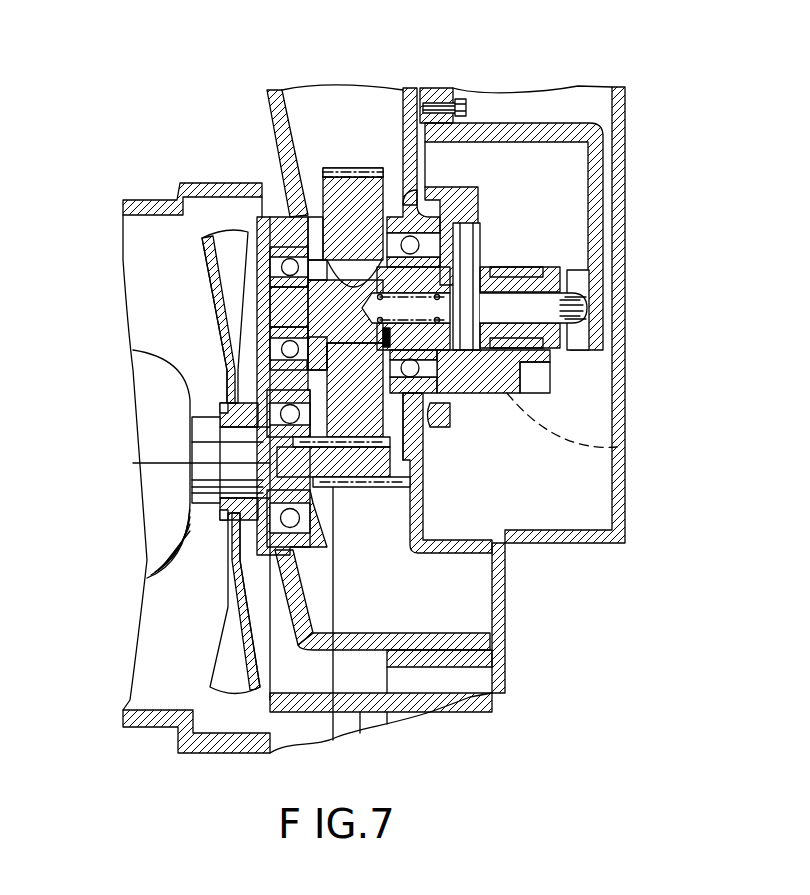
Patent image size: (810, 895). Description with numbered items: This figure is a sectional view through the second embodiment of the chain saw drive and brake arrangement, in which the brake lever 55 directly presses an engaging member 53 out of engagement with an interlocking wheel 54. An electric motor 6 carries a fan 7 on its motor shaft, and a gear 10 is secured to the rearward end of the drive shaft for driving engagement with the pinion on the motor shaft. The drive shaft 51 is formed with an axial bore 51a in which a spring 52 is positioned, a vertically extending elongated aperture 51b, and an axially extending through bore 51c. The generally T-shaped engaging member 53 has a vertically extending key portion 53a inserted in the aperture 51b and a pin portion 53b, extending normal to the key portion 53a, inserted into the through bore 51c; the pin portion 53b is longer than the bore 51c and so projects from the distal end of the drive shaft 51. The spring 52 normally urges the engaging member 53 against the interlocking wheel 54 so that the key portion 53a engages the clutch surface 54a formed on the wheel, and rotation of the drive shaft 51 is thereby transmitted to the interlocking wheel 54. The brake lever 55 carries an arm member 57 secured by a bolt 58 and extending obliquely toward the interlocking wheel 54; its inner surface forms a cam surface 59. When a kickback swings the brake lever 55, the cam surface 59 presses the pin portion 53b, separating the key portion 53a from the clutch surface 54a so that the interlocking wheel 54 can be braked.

The electric motor 6 is at (145, 491).
The fan 7 is at (232, 582).
The gear 10 is at (370, 452).
The drive shaft 51 is at (285, 235).
The axial bore 51a is at (365, 310).
The elongated aperture 51b is at (402, 212).
The through bore 51c is at (560, 302).
The spring 52 is at (373, 300).
The engaging member 53 is at (560, 328).
The key portion 53a is at (470, 272).
The pin portion 53b is at (588, 297).
The interlocking wheel 54 is at (513, 370).
The clutch surface 54a is at (625, 448).
The brake lever 55 is at (431, 90).
The arm member 57 is at (606, 150).
The bolt 58 is at (462, 108).
The cam surface 59 is at (578, 280).